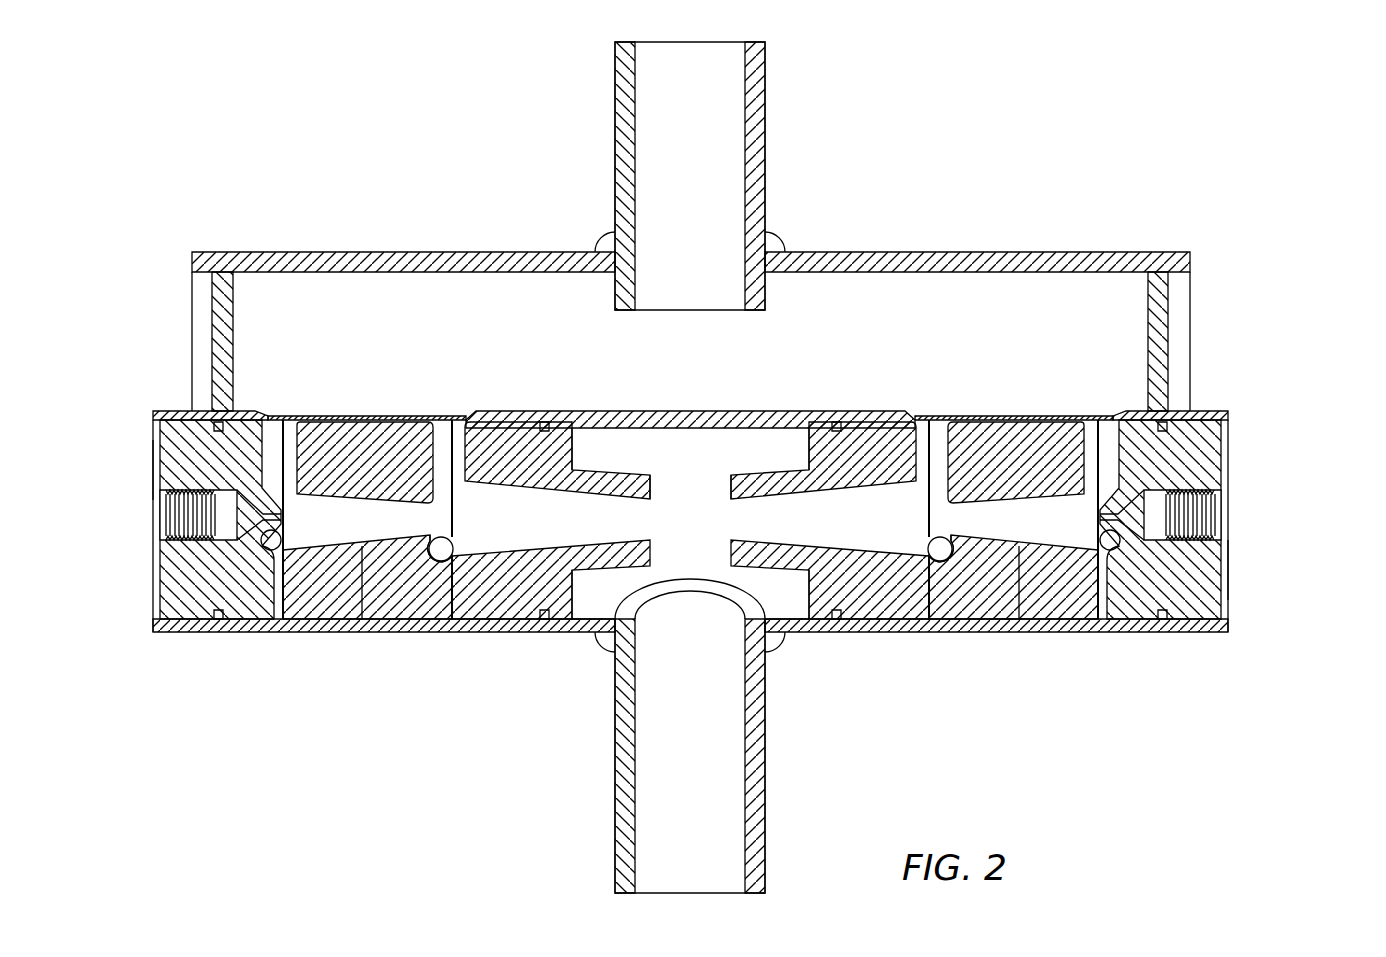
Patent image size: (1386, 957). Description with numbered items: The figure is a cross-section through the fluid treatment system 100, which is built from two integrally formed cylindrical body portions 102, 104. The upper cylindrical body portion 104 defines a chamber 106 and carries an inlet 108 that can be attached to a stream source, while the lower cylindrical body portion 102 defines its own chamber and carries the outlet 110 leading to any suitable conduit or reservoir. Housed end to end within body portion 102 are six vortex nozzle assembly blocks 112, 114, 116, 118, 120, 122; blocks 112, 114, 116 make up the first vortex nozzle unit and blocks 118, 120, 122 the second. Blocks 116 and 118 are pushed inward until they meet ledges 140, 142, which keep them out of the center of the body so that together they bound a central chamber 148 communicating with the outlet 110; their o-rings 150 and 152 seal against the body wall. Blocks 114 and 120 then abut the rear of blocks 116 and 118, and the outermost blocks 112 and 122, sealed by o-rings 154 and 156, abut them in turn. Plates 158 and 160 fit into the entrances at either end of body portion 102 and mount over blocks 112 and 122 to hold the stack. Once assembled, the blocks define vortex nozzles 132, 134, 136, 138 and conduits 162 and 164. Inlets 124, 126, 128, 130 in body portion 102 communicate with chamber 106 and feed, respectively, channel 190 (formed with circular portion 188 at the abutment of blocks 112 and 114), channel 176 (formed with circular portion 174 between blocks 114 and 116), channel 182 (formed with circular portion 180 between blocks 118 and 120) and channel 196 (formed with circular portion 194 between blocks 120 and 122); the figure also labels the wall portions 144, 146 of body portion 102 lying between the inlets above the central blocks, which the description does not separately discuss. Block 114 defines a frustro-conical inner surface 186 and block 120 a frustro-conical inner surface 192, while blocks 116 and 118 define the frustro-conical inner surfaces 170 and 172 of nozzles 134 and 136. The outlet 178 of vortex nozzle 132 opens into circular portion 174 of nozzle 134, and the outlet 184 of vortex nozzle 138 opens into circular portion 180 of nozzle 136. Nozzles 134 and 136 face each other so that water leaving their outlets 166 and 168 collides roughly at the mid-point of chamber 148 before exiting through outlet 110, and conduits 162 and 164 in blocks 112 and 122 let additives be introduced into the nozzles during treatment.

The fluid treatment system 100 is at (1240, 212).
The cylindrical body portion 102 is at (1268, 460).
The cylindrical body portion 104 is at (1186, 318).
The chamber 106 is at (710, 374).
The inlet 108 is at (710, 174).
The outlet 110 is at (710, 754).
The vortex nozzle assembly block 112 is at (175, 598).
The vortex nozzle assembly block 114 is at (399, 619).
The vortex nozzle assembly block 116 is at (500, 612).
The vortex nozzle assembly block 118 is at (903, 619).
The vortex nozzle assembly block 120 is at (1065, 619).
The vortex nozzle assembly block 122 is at (1212, 619).
The inlet 124 is at (276, 427).
The inlet 126 is at (440, 433).
The inlet 128 is at (920, 433).
The inlet 130 is at (1090, 433).
The vortex nozzle 132 is at (348, 534).
The vortex nozzle 134 is at (555, 534).
The vortex nozzle 136 is at (818, 534).
The vortex nozzle 138 is at (1055, 534).
The ledge 140 is at (793, 632).
The ledge 142 is at (600, 632).
The top plate left end 144 is at (580, 418).
The top plate right end 146 is at (800, 418).
The chamber 148 is at (710, 554).
The o-ring 150 is at (545, 632).
The o-ring 152 is at (837, 619).
The o-ring 154 is at (222, 619).
The o-ring 156 is at (1162, 619).
The plate 158 is at (155, 466).
The plate 160 is at (1233, 567).
The conduit 162 is at (215, 527).
The conduit 164 is at (1167, 527).
The outlet 166 is at (652, 505).
The outlet 168 is at (727, 508).
The frustro-conical inner surface 170 is at (557, 550).
The frustro-conical inner surface 172 is at (878, 573).
The circular portion 174 is at (469, 562).
The channel 176 is at (458, 432).
The outlet 178 is at (432, 548).
The circular portion 180 is at (942, 555).
The channel 182 is at (932, 432).
The outlet 184 is at (962, 545).
The frustro-conical inner surface 186 is at (362, 619).
The circular portion 188 is at (275, 552).
The channel 190 is at (288, 432).
The frustro-conical inner surface 192 is at (1020, 548).
The circular portion 194 is at (1110, 552).
The channel 196 is at (1112, 432).